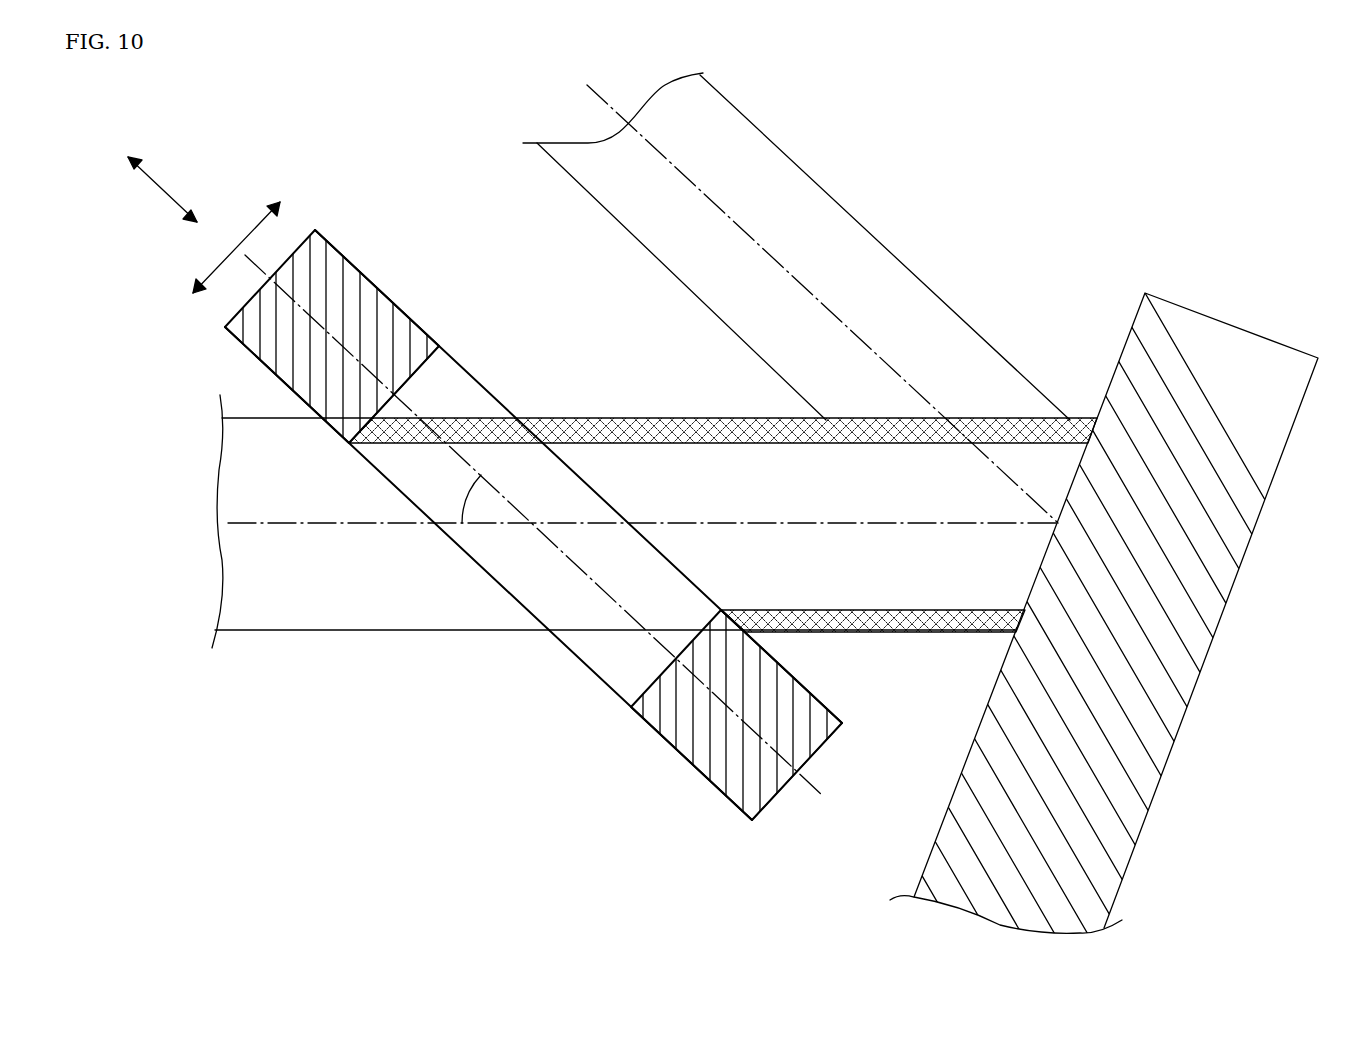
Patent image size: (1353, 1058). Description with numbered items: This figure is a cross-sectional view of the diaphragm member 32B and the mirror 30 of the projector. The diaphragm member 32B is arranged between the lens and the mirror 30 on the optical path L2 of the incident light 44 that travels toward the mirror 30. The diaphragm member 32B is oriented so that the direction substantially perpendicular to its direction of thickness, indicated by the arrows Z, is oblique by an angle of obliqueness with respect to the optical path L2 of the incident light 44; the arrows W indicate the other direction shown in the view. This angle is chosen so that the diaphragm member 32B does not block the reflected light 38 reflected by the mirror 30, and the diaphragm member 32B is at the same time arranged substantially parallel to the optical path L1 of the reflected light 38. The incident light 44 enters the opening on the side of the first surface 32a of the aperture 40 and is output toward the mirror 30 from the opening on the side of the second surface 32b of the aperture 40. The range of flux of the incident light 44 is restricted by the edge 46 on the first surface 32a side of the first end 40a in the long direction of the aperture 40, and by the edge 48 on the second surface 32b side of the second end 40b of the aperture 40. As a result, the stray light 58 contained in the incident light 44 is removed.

The mirror 30 is at (1170, 677).
The first surface 32a is at (685, 760).
The second surface 32b is at (788, 670).
The diaphragm member 32B is at (770, 778).
The reflected light 38 is at (796, 298).
The aperture 40 is at (527, 540).
The first end 40a is at (346, 337).
The second end 40b is at (710, 730).
The incident light 44 is at (332, 617).
The edge 46 is at (345, 438).
The edge 48 is at (760, 620).
The stray light 58 is at (683, 425).
The optical path of the reflected light L1 is at (643, 132).
The optical path of the incident light L2 is at (278, 525).
The width direction W is at (160, 188).
The direction substantially perpendicular to direction of thickness Z is at (217, 260).